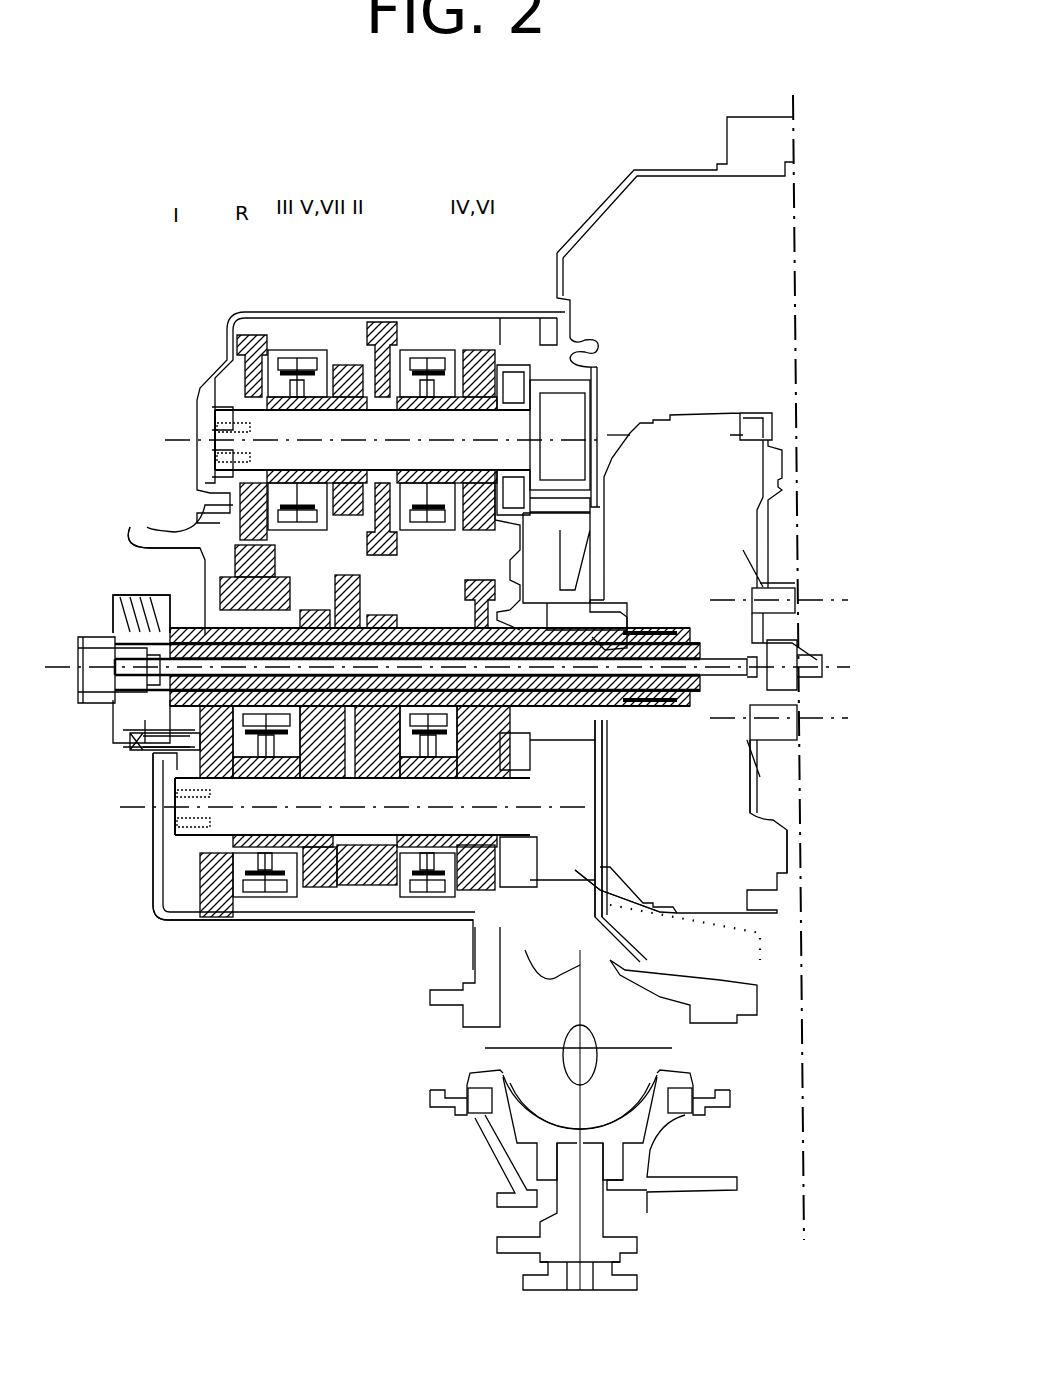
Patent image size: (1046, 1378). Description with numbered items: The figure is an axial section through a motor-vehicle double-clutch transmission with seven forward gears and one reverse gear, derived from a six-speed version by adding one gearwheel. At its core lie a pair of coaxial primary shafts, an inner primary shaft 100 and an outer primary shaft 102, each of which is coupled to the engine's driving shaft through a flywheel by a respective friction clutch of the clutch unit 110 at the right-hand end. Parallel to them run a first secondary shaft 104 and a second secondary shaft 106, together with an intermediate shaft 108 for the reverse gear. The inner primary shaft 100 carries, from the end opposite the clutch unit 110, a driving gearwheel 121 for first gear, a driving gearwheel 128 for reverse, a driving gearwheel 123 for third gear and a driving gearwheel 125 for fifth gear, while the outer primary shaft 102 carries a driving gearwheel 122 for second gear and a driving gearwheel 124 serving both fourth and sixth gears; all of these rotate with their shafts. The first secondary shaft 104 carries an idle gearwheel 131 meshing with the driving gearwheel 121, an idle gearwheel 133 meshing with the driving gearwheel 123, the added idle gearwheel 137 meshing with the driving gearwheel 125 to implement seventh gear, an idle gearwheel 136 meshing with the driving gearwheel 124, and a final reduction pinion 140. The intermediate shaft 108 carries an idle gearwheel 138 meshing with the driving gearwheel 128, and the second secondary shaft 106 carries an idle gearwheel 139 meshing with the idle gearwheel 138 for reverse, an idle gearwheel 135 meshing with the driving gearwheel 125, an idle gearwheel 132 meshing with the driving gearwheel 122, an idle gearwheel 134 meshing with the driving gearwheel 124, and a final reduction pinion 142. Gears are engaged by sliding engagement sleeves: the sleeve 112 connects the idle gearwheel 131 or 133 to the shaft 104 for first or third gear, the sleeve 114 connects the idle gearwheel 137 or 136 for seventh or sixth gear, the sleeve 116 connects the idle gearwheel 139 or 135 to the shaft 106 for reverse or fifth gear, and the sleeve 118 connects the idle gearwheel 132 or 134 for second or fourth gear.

The inner primary shaft 100 is at (418, 640).
The outer primary shaft 102 is at (627, 717).
The first secondary shaft 104 is at (178, 875).
The second secondary shaft 106 is at (572, 425).
The intermediate shaft 108 is at (163, 527).
The clutch unit 110 is at (690, 462).
The sliding engagement sleeve 112 is at (253, 930).
The sliding engagement sleeve 114 is at (417, 930).
The sliding engagement sleeve 116 is at (303, 352).
The sliding engagement sleeve 118 is at (428, 360).
The driving gearwheel 121 is at (190, 625).
The driving gearwheel 122 is at (385, 615).
The driving gearwheel 123 is at (312, 610).
The driving gearwheel 124 is at (480, 580).
The driving gearwheel 125 is at (337, 575).
The driving gearwheel 128 is at (245, 728).
The idle gearwheel 131 is at (215, 928).
The idle gearwheel 132 is at (383, 324).
The idle gearwheel 133 is at (297, 930).
The idle gearwheel 134 is at (480, 355).
The idle gearwheel 135 is at (350, 368).
The idle gearwheel 136 is at (447, 930).
The idle gearwheel 137 is at (333, 930).
The idle gearwheel 138 is at (233, 520).
The idle gearwheel 139 is at (250, 338).
The final reduction pinion 140 is at (595, 850).
The final reduction pinion 142 is at (572, 385).